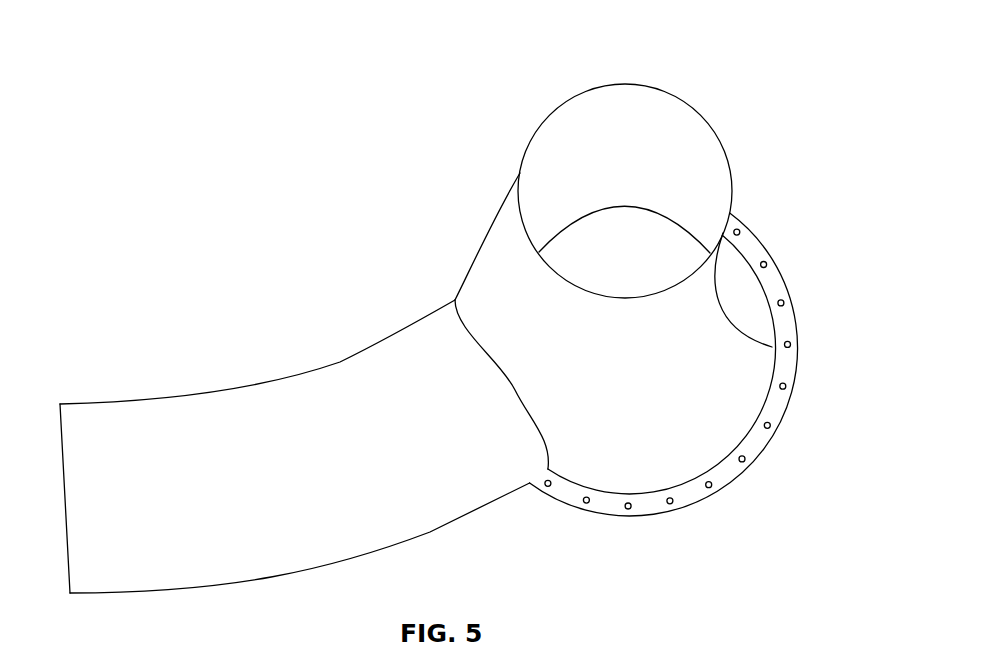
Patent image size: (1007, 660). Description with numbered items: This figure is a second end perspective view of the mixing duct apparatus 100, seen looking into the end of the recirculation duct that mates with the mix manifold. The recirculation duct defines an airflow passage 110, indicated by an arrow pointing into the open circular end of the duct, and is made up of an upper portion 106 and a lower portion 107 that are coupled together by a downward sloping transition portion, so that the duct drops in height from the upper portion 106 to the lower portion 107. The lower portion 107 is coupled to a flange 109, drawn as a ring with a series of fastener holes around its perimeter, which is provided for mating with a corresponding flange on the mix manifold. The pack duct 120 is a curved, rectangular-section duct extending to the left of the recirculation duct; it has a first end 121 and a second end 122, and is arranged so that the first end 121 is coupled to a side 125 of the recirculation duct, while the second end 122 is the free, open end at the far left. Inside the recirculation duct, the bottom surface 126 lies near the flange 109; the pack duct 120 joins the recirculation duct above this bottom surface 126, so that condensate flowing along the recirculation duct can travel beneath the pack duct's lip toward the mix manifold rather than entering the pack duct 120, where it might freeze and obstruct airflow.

The mixing duct apparatus 100 is at (785, 100).
The upper portion 106 is at (550, 112).
The lower portion 107 is at (742, 442).
The flange 109 is at (785, 374).
The airflow passage 110 is at (642, 241).
The pack duct 120 is at (138, 400).
The first end 121 is at (449, 310).
The second end 122 is at (60, 402).
The side 125 is at (475, 263).
The bottom surface 126 is at (621, 475).